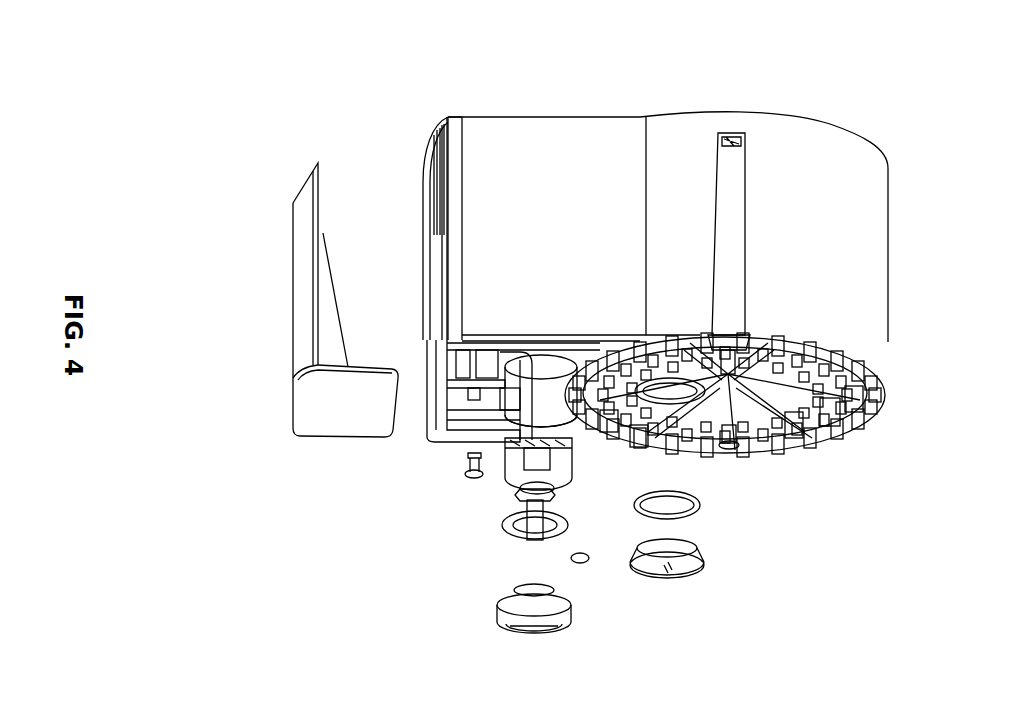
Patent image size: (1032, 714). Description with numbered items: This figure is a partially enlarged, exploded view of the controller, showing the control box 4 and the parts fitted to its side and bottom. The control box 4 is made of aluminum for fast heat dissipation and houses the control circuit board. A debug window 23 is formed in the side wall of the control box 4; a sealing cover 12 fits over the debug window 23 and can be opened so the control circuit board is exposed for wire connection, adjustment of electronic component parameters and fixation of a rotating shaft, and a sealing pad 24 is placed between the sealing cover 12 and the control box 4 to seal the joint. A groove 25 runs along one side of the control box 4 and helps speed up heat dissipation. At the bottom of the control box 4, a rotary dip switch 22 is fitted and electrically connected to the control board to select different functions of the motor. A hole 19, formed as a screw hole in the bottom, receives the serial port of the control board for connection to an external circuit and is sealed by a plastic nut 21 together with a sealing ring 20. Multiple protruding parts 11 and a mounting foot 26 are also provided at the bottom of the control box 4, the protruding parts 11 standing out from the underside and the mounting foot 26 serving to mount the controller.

The control box 4 is at (843, 180).
The protruding parts 11 is at (860, 423).
The sealing cover 12 is at (297, 283).
The hole 19 is at (720, 445).
The sealing ring 20 is at (703, 505).
The plastic nut 21 is at (690, 567).
The rotary dip switch 22 is at (512, 598).
The debug window 23 is at (437, 318).
The sealing pad 24 is at (437, 210).
The groove 25 is at (730, 168).
The mounting foot 26 is at (857, 368).